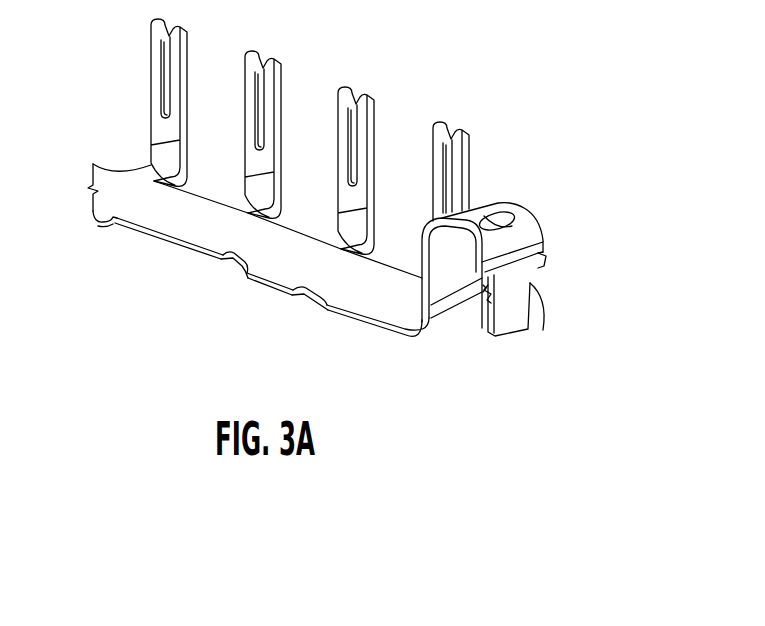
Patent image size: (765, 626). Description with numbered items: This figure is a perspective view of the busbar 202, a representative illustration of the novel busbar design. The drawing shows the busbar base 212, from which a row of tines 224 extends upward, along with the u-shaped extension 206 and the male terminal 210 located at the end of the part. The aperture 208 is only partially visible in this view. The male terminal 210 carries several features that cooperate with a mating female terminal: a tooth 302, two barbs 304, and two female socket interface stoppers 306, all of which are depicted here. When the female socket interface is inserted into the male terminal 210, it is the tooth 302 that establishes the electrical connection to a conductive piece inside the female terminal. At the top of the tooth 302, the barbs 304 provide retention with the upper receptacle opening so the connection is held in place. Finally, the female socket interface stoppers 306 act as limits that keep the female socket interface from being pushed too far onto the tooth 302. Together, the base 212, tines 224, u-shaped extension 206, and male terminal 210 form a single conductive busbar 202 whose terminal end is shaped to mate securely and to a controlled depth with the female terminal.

The busbar 202 is at (325, 332).
The u-shaped extension 206 is at (440, 252).
The aperture 208 is at (528, 200).
The male terminal 210 is at (563, 250).
The busbar base 212 is at (173, 225).
The tines 224 is at (148, 83).
The tooth 302 is at (510, 327).
The barbs 304 is at (488, 292).
The female socket interface stoppers 306 is at (543, 256).